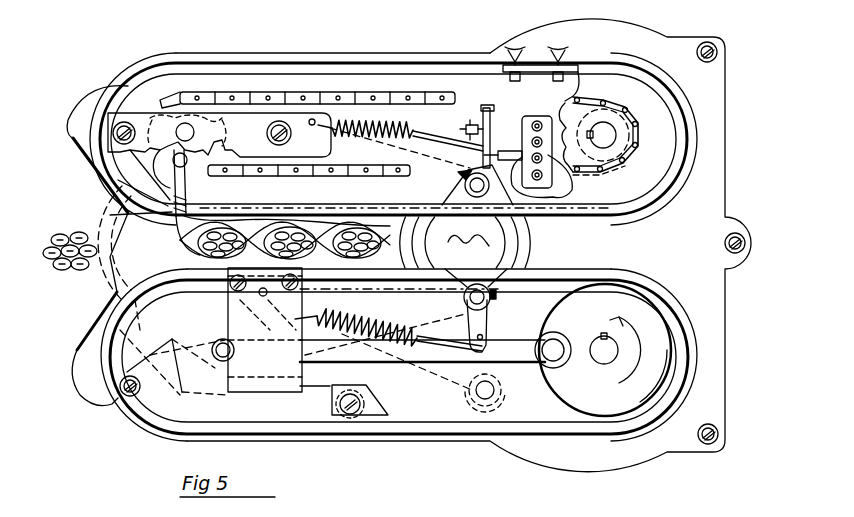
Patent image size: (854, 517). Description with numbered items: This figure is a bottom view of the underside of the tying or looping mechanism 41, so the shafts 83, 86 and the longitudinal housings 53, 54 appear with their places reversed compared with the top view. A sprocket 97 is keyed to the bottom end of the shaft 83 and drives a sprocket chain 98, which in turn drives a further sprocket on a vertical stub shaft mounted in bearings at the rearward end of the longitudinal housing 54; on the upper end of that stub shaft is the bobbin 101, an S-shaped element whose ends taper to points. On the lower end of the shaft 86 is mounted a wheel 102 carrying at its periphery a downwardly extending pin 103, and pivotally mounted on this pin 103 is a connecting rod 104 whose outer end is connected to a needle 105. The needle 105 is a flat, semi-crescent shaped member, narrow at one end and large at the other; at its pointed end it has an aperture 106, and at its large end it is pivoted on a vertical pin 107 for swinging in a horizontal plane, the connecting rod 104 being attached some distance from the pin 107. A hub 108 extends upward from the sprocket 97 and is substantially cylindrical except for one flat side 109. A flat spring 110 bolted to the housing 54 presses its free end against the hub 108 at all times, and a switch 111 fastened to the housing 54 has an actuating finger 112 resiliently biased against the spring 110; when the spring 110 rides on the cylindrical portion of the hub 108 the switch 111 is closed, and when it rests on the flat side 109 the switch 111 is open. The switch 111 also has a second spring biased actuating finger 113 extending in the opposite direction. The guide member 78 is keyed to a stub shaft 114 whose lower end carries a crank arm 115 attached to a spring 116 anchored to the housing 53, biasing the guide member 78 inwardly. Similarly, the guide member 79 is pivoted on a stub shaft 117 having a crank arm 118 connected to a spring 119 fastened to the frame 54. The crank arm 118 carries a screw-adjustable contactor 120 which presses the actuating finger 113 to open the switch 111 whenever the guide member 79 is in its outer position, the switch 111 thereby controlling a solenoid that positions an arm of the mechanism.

The tying or looping mechanism 41 is at (326, 60).
The longitudinal housing 53 is at (432, 424).
The longitudinal housing 54 is at (398, 60).
The guide member 78 is at (88, 380).
The guide member 79 is at (85, 117).
The shaft 83 is at (607, 137).
The shaft 86 is at (618, 357).
The sprocket 97 is at (603, 97).
The sprocket chain 98 is at (453, 97).
The bobbin 101 is at (163, 157).
The wheel 102 is at (657, 344).
The pin 103 is at (552, 356).
The connecting rod 104 is at (373, 354).
The needle 105 is at (110, 268).
The aperture 106 is at (150, 190).
The vertical pin 107 is at (303, 295).
The hub 108 is at (637, 168).
The flat side 109 is at (643, 143).
The flat spring 110 is at (593, 87).
The switch 111 is at (517, 53).
The actuating finger 112 is at (578, 65).
The actuating finger 113 is at (517, 150).
The stub shaft 114 is at (487, 300).
The crank arm 115 is at (467, 318).
The spring 116 is at (345, 330).
The stub shaft 117 is at (488, 193).
The crank arm 118 is at (480, 110).
The spring 119 is at (355, 124).
The contactor 120 is at (482, 148).